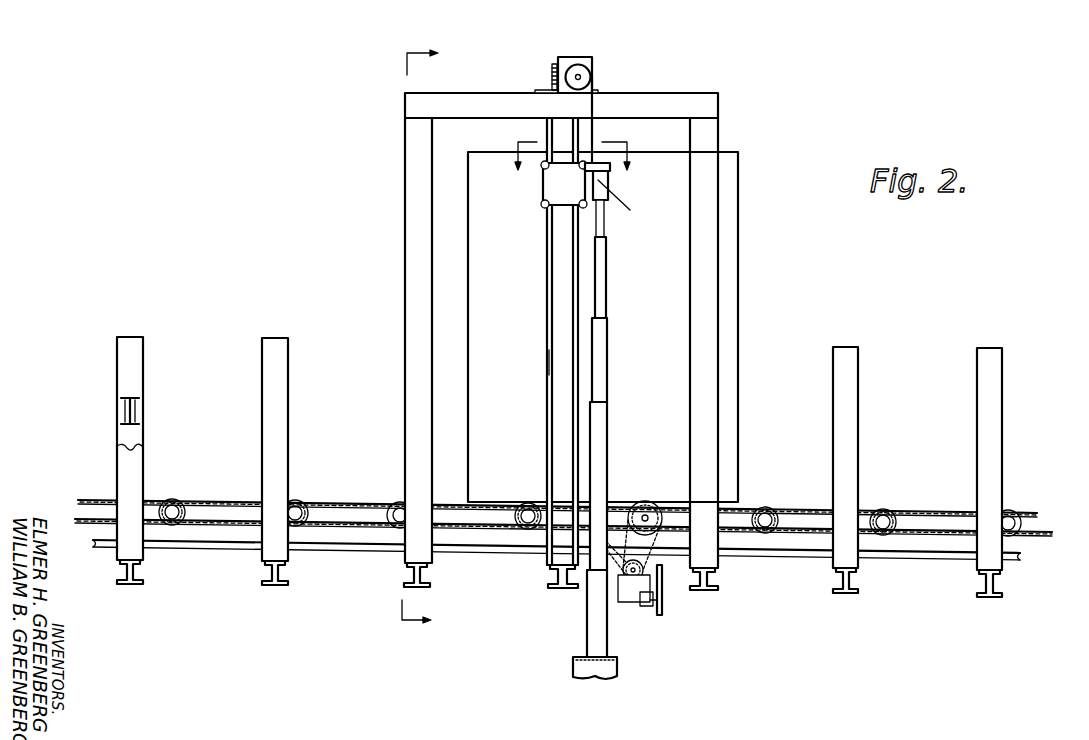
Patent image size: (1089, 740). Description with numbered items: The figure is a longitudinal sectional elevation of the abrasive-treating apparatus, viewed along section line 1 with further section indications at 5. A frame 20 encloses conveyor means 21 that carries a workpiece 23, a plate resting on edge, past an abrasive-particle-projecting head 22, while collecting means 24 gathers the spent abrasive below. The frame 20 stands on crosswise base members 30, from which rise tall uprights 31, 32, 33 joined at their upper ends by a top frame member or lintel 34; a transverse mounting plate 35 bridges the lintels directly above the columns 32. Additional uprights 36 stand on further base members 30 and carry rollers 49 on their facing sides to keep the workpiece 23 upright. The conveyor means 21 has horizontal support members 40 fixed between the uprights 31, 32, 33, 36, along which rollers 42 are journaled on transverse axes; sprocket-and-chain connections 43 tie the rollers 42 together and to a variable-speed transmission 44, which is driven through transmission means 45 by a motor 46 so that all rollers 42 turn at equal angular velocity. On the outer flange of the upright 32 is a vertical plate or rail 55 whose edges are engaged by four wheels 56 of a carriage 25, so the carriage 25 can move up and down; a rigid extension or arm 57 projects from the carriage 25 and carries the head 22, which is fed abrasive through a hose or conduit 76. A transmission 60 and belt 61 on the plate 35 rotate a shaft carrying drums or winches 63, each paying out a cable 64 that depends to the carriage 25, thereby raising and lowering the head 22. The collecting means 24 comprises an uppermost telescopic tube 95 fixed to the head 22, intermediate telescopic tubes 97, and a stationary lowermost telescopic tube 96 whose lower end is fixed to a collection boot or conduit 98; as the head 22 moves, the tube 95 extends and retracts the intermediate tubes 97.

The section line 1- 1 is at (427, 340).
The section line 5- 5 is at (571, 166).
The frame 20 is at (562, 316).
The conveyor means 21 is at (917, 512).
The abrasive-particle-projecting head 22 is at (608, 200).
The workpiece 23 is at (740, 268).
The collecting means 24 is at (607, 352).
The carriage 25 is at (544, 199).
The base members 30 is at (404, 586).
The uprights 31 is at (710, 318).
The uprights 32 is at (556, 363).
The uprights 33 is at (405, 431).
The top frame member or lintel 34 is at (665, 100).
The transverse mounting plate 35 is at (540, 91).
The additional uprights 36 is at (262, 382).
The support members 40 is at (905, 549).
The rollers 42 is at (176, 500).
The sprocket-and-chain connections 43 is at (350, 503).
The variable-speed transmission 44 is at (626, 600).
The transmission means 45 is at (662, 588).
The motor 46 is at (645, 606).
The rollers 49 is at (125, 412).
The plate or rail 55 is at (557, 308).
The wheels 56 is at (580, 208).
The extension or arm 57 is at (607, 174).
The transmission 60 is at (595, 62).
The belt 61 is at (554, 64).
The drums or winches 63 is at (590, 78).
The cable 64 is at (593, 136).
The hose or conduit 76 is at (630, 210).
The uppermost telescopic tube 95 is at (604, 238).
The lowermost telescopic tube 96 is at (588, 630).
The intermediate telescopic tubes 97 is at (605, 293).
The collection boot or conduit 98 is at (573, 668).